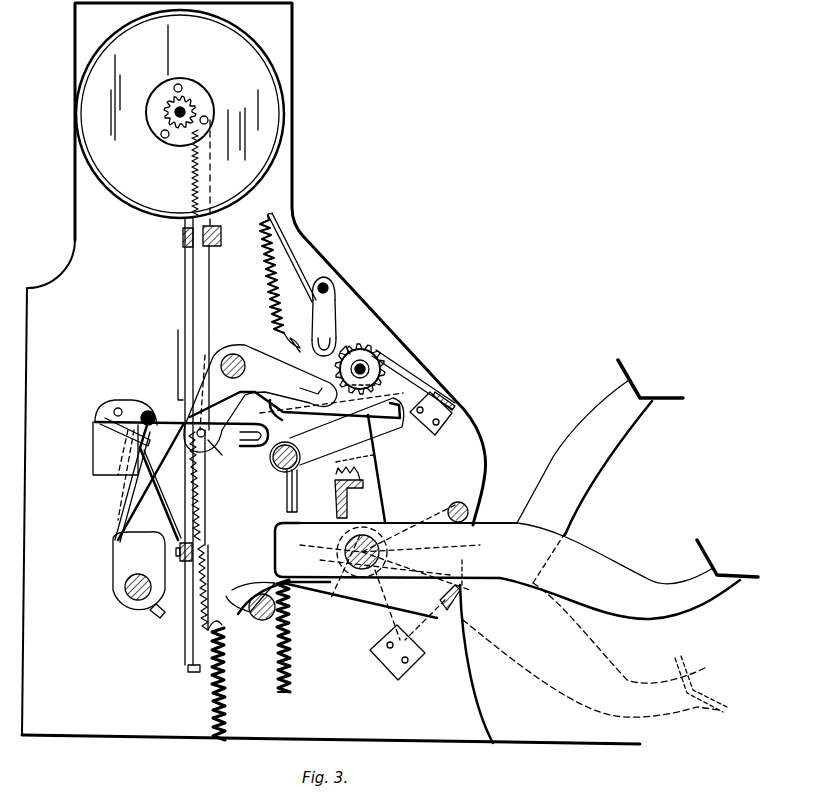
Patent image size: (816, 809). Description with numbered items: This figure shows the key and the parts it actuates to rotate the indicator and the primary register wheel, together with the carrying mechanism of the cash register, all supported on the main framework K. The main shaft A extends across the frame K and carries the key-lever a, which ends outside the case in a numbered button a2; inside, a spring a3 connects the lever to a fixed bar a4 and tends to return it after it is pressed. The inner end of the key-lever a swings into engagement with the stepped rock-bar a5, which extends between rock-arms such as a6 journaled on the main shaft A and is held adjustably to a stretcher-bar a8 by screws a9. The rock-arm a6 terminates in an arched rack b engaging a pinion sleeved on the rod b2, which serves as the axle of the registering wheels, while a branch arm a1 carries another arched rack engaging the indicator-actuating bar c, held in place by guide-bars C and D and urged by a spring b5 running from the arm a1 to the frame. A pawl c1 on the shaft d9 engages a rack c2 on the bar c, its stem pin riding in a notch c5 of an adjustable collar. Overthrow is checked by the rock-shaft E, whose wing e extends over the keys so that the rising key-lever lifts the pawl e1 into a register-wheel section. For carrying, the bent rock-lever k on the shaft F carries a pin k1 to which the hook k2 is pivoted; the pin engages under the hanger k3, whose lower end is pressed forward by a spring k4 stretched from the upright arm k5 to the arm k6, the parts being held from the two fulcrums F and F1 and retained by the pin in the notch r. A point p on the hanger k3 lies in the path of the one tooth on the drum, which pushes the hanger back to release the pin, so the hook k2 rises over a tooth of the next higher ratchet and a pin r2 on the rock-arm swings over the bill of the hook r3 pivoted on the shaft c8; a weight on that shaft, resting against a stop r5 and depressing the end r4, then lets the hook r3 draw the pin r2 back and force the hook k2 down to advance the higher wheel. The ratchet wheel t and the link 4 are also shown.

The guide-bar C is at (222, 244).
The indicator-actuating bar c is at (206, 326).
The pawl c1 is at (135, 439).
The rack c2 is at (150, 483).
The notch c5 is at (351, 492).
The shaft c8 is at (150, 414).
The bent lever or rock-lever k is at (260, 398).
The pin k1 is at (317, 393).
The hook k2 is at (340, 336).
The hanger k3 is at (326, 318).
The spring k4 is at (262, 273).
The upright arm k5 is at (297, 260).
The arm k6 is at (288, 340).
The shaft F is at (238, 354).
The fulcrum F1 is at (328, 280).
The point p is at (353, 345).
The ratchet wheel t is at (360, 432).
The arched rack b is at (278, 407).
The rod b2 is at (368, 366).
The spring b5 is at (229, 661).
The notch r is at (181, 428).
The pin r2 is at (216, 454).
The hook r3 is at (246, 443).
The end of hook r4 is at (105, 418).
The stop r5 is at (162, 518).
The main framework K is at (69, 537).
The rock-shaft E is at (275, 464).
The wing e is at (284, 494).
The pawl e1 is at (332, 429).
The key-lever a is at (507, 548).
The branch arm a1 is at (260, 592).
The button a2 is at (688, 468).
The spring a3 is at (295, 636).
The fixed bar a4 is at (294, 683).
The stepped rock-bar a5 is at (458, 543).
The rock-arm a6 is at (375, 456).
The stretcher-bar a8 is at (363, 466).
The screws a9 is at (441, 461).
The main shaft A is at (373, 545).
The link 4 is at (455, 601).
The guide-bar D is at (186, 565).
The shaft d9 is at (140, 602).